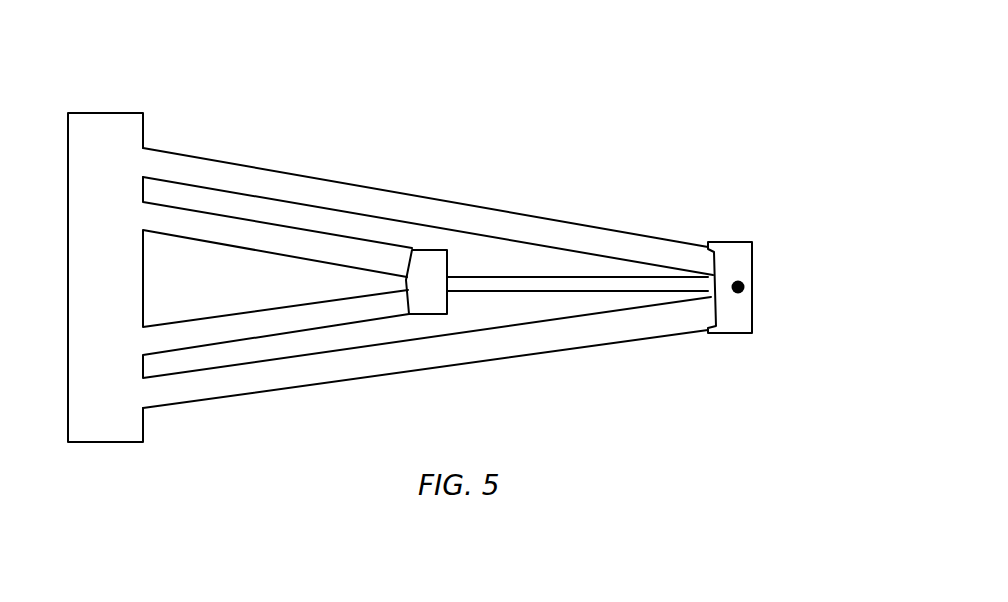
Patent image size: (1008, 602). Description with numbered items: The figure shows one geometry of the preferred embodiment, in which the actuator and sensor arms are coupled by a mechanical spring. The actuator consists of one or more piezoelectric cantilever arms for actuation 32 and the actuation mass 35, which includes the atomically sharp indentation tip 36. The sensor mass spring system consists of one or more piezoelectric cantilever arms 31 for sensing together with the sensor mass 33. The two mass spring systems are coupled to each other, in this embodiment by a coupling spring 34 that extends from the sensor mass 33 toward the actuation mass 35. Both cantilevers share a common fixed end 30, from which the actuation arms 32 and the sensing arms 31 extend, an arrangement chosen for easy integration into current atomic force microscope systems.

The common fixed end 30 is at (115, 103).
The piezoelectric cantilever arms for sensing 31 is at (192, 195).
The piezoelectric cantilever arms for actuation 32 is at (318, 167).
The sensor mass 33 is at (428, 248).
The coupling spring 34 is at (577, 275).
The actuation mass 35 is at (733, 240).
The atomically sharp indentation tip 36 is at (746, 287).